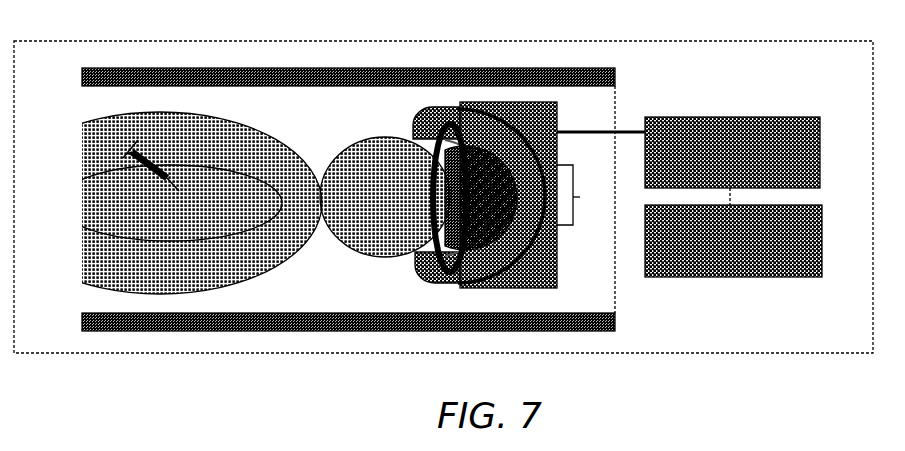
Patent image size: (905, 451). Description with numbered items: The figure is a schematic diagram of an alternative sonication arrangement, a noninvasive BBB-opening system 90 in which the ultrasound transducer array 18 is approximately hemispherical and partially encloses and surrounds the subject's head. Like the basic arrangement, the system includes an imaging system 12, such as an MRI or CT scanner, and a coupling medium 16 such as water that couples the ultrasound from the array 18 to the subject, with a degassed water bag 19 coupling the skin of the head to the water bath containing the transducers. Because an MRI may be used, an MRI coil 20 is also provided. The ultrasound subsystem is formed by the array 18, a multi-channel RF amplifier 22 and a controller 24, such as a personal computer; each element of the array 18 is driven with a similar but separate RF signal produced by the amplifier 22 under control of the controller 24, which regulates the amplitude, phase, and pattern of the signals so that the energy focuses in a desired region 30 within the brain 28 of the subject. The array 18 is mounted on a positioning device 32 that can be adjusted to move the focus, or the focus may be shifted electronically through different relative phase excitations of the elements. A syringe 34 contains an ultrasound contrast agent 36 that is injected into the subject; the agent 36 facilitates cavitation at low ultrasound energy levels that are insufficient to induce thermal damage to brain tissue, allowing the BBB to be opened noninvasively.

The noninvasive BBB-opening system 90 is at (214, 28).
The imaging system 12 is at (552, 84).
The coupling medium 16 is at (418, 126).
The ultrasound transducer array 18 is at (527, 252).
The degassed water bag 19 is at (428, 275).
The MRI coil 20 is at (430, 241).
The RF amplifier 22 is at (806, 168).
The controller 24 is at (805, 255).
The brain 28 is at (452, 160).
The desired region 30 is at (433, 183).
The positioning device 32 is at (580, 195).
The syringe 34 is at (142, 152).
The ultrasound contrast agent 36 is at (160, 163).